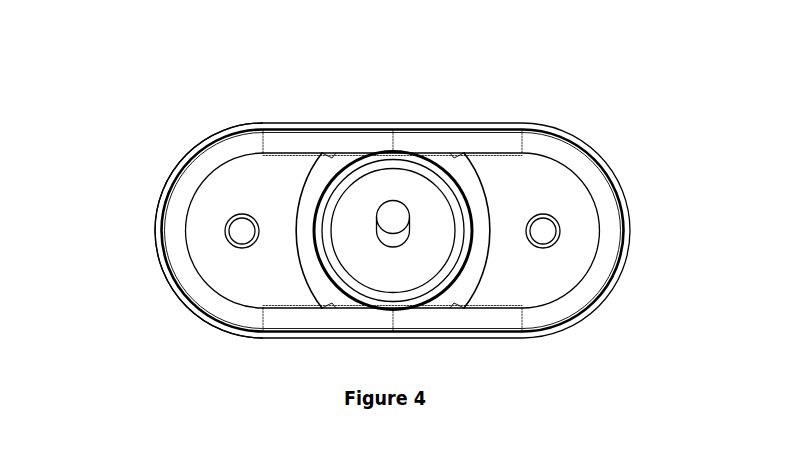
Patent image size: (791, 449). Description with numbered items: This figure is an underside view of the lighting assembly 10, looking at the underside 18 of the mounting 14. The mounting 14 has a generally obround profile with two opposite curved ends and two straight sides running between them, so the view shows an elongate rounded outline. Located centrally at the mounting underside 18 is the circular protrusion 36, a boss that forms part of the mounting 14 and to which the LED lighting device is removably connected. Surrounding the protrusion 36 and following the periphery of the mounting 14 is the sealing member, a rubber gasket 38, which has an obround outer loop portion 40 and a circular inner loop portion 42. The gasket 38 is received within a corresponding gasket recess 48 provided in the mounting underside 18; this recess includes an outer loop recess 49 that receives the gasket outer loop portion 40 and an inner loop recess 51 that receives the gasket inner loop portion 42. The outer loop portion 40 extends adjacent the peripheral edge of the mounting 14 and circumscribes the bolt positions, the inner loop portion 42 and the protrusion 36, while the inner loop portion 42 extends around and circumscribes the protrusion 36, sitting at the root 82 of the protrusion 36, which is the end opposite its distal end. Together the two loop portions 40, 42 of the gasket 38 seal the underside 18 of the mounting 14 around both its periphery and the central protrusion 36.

The assembly 10 is at (135, 129).
The mounting 14 is at (618, 168).
The underside 18 is at (560, 268).
The circular protrusion 36 is at (417, 267).
The rubber gasket 38 is at (176, 270).
The outer loop portion 40 is at (238, 148).
The inner loop portion 42 is at (325, 178).
The gasket recess 48 is at (160, 194).
The outer loop recess 49 is at (162, 234).
The inner loop recess 51 is at (478, 170).
The root 82 is at (460, 265).